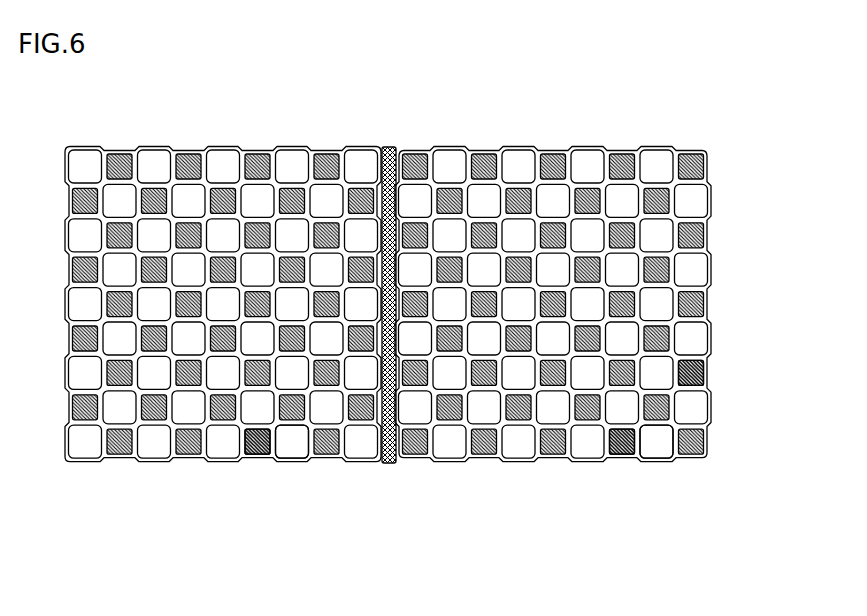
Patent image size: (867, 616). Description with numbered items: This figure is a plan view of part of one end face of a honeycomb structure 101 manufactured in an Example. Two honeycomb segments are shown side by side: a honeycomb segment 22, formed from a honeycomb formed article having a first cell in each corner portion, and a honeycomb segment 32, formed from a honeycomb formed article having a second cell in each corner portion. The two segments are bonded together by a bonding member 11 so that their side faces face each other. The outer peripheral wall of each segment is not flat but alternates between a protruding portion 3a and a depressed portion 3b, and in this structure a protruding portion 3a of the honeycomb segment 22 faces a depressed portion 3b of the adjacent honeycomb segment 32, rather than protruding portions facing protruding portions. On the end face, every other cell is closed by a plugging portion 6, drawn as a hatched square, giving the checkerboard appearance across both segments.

The honeycomb structure 101 is at (828, 122).
The honeycomb segment 22 is at (122, 459).
The honeycomb segment 32 is at (527, 460).
The bonding member 11 is at (390, 463).
The protruding portion 3a is at (292, 460).
The depressed portion 3b is at (252, 457).
The plugging portion 6 is at (703, 372).